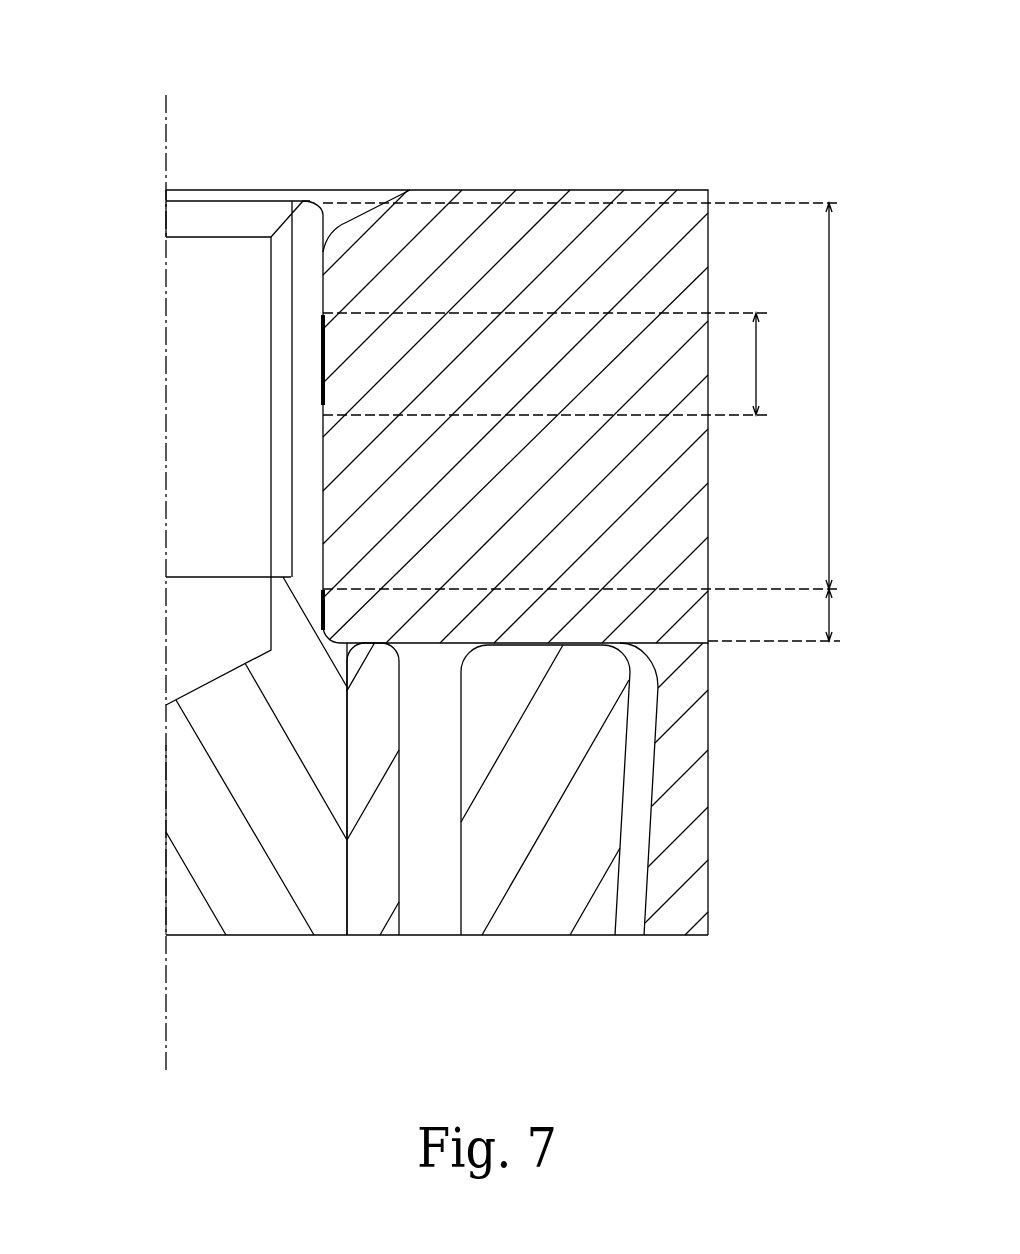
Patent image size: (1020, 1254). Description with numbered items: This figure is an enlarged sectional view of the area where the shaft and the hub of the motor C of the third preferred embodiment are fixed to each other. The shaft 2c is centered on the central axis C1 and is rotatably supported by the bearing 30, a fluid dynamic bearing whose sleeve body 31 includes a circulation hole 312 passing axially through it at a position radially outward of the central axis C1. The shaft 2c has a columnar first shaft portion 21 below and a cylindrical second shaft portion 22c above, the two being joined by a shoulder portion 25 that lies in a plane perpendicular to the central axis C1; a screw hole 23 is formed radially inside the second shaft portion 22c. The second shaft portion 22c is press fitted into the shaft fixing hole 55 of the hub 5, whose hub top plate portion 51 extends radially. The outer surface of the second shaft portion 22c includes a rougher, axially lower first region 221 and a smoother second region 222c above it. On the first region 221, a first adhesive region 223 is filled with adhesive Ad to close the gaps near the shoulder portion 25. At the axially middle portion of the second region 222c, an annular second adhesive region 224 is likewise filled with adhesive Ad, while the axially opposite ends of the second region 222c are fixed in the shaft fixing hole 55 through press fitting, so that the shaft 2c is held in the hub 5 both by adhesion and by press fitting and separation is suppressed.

The motor C is at (668, 92).
The central axis C1 is at (176, 104).
The hub 5 is at (637, 190).
The hub top plate portion 51 is at (437, 188).
The shaft fixing hole 55 is at (323, 489).
The second shaft portion 22c is at (300, 245).
The screw hole 23 is at (190, 277).
The first adhesive region 223 is at (320, 600).
The second adhesive region 224 is at (561, 364).
The second region 222c is at (602, 396).
The first region 221 is at (786, 615).
The adhesive Ad is at (323, 360).
The shoulder portion 25 is at (323, 627).
The first shaft portion 21 is at (200, 805).
The shaft 2c is at (166, 875).
The circulation hole 312 is at (431, 905).
The sleeve body 31 is at (524, 918).
The bearing 30 is at (588, 918).